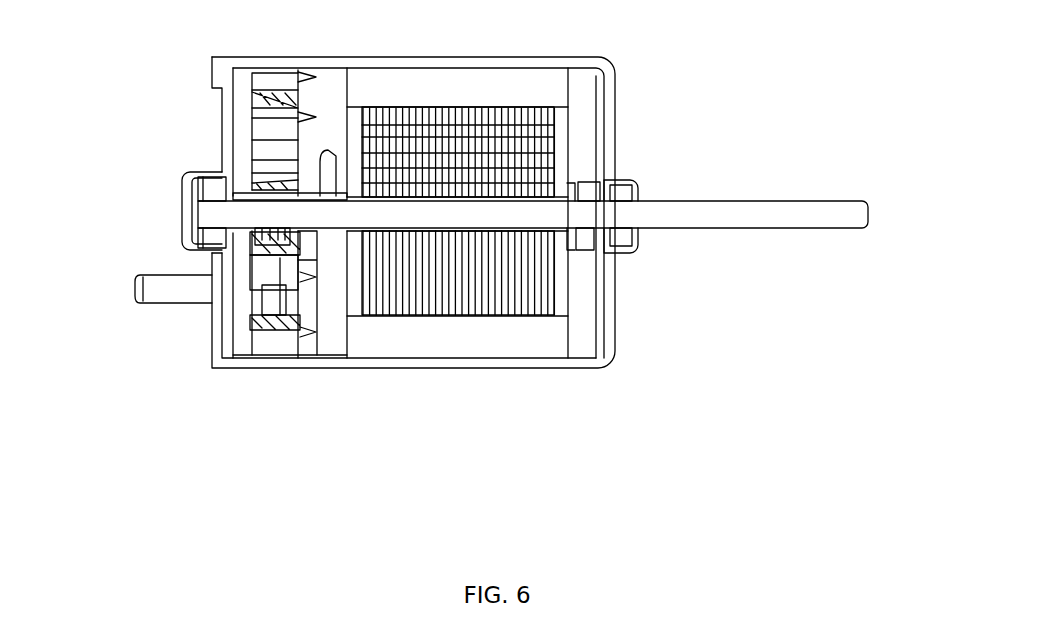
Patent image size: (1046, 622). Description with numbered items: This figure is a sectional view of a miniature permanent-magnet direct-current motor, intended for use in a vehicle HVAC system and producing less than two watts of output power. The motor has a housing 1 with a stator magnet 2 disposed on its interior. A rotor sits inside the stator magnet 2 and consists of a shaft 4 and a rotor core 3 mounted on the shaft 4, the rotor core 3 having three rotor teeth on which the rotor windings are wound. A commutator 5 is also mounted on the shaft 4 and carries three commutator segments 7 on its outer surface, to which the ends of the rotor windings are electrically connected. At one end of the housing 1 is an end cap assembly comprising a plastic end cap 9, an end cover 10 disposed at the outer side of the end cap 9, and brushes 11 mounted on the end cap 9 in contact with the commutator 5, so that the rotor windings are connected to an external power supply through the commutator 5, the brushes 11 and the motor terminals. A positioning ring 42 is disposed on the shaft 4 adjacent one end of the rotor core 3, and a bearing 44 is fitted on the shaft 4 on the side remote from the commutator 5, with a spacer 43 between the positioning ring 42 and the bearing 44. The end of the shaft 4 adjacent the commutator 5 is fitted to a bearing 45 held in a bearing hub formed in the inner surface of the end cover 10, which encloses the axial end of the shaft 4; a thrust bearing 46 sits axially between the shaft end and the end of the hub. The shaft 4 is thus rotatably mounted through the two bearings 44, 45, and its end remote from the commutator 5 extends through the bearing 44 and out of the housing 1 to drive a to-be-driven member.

The housing 1 is at (577, 363).
The stator magnet 2 is at (432, 335).
The rotor core 3 is at (485, 248).
The shaft 4 is at (677, 217).
The commutator 5 is at (327, 233).
The commutator segments 7 is at (253, 190).
The end cap 9 is at (262, 318).
The end cover 10 is at (222, 302).
The brushes 11 is at (247, 257).
The positioning ring 42 is at (593, 195).
The spacer 43 is at (612, 185).
The bearing 44 is at (613, 252).
The bearing 45 is at (212, 233).
The thrust bearing 46 is at (183, 227).